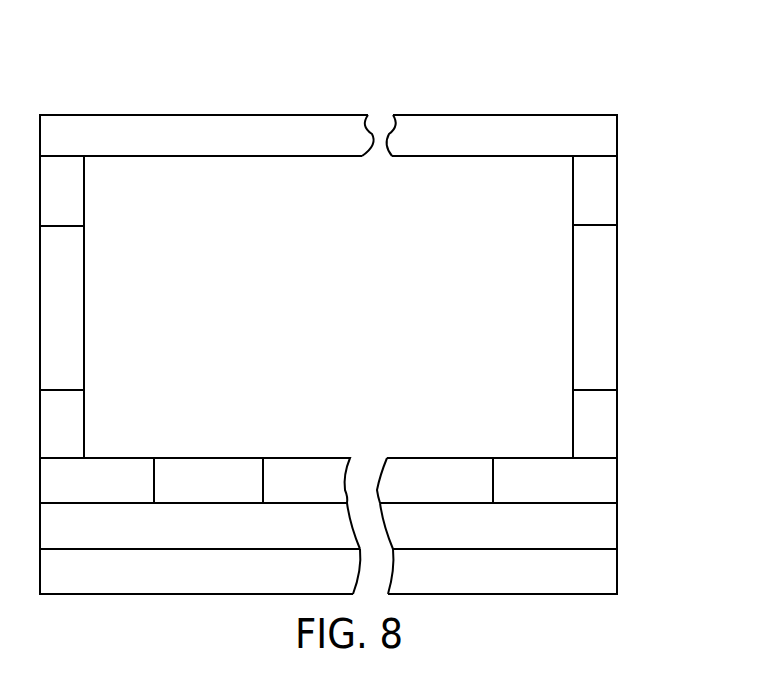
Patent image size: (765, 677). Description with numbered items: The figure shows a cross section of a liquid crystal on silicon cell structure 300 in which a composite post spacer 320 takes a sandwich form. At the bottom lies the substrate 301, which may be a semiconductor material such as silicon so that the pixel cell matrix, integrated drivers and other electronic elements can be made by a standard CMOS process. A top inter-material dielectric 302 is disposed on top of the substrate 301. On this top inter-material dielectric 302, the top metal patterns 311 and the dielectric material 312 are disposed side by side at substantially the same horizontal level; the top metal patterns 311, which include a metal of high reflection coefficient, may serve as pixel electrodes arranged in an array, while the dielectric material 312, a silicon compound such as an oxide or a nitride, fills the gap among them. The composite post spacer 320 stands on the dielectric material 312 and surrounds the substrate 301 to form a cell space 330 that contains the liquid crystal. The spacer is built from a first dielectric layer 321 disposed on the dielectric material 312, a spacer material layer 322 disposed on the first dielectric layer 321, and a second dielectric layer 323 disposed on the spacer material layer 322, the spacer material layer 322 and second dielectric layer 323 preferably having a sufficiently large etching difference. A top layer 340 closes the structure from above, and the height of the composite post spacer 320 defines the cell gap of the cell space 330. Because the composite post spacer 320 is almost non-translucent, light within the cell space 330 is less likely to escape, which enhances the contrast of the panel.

The liquid crystal on silicon cell structure 300 is at (573, 98).
The substrate 301 is at (335, 585).
The top inter-material dielectric 302 is at (335, 540).
The top metal patterns 311 is at (224, 493).
The dielectric material 312 is at (115, 493).
The composite post spacer 320 is at (627, 156).
The first dielectric layer 321 is at (82, 437).
The spacer material layer 322 is at (82, 327).
The second dielectric layer 323 is at (82, 202).
The cell space 330 is at (375, 355).
The top layer 340 is at (315, 146).